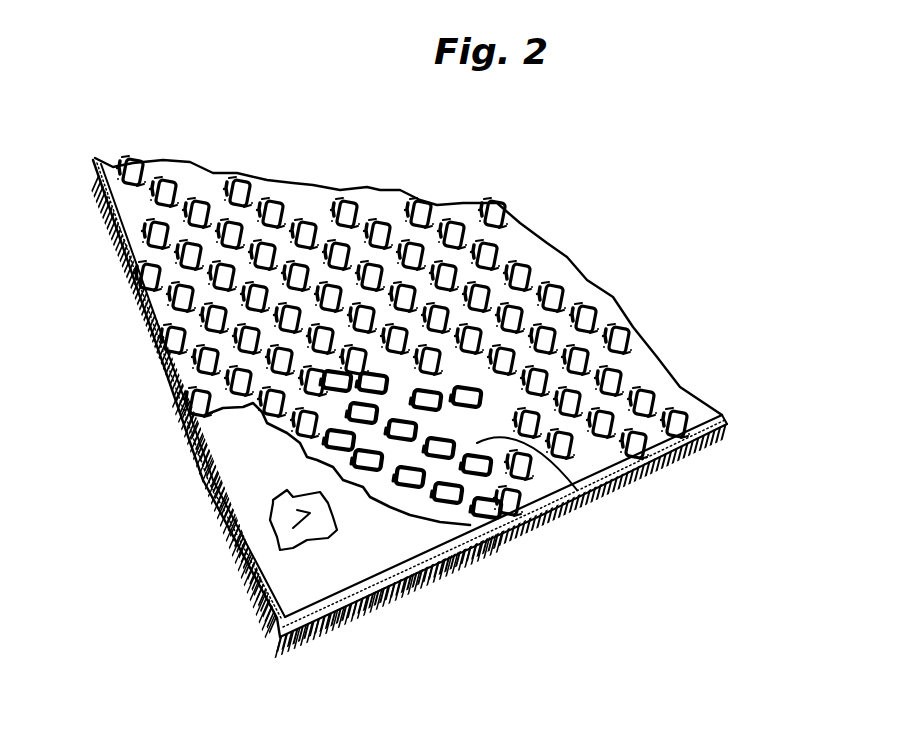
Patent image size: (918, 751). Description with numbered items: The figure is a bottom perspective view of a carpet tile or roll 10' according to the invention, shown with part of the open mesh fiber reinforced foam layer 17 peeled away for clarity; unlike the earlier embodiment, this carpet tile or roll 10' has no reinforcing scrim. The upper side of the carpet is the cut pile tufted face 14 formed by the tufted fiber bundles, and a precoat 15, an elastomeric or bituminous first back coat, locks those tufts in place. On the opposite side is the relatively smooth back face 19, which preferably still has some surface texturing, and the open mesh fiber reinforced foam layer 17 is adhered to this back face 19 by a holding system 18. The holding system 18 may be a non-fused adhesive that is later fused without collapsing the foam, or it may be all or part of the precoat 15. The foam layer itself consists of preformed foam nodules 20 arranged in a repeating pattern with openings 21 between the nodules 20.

The carpet tile or roll 10' is at (187, 329).
The cut pile tufted face 14 is at (582, 528).
The precoat 15 is at (720, 417).
The open mesh fiber reinforced foam layer 17 is at (600, 504).
The holding system 18 is at (373, 543).
The back face 19 is at (270, 510).
The foam nodules 20 is at (206, 240).
The openings 21 is at (543, 333).